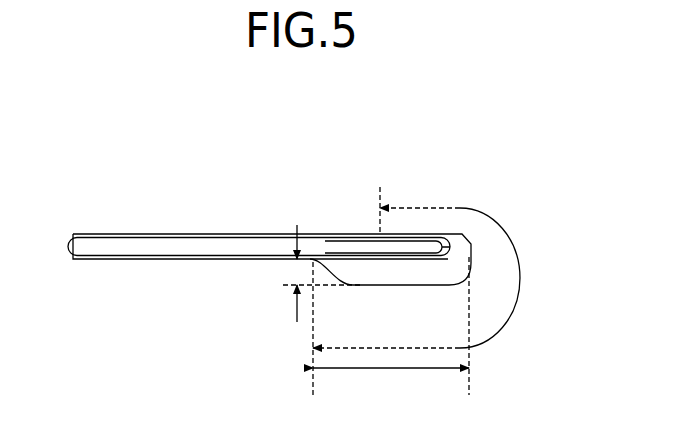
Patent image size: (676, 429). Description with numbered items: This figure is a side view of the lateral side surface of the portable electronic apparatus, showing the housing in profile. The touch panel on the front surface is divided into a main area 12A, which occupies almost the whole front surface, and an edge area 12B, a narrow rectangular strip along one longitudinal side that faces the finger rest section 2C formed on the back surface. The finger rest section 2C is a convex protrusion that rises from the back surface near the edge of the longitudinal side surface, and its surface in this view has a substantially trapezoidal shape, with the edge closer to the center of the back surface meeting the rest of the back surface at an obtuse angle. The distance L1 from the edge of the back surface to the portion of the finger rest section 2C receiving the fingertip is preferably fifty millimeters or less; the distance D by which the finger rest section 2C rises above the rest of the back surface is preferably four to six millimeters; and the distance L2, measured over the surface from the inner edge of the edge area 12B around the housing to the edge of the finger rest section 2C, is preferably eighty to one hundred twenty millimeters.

The main area 12A is at (249, 233).
The edge area 12B is at (403, 233).
The finger rest section 2C is at (405, 286).
The distance D is at (316, 273).
The distance L1 is at (391, 327).
The distance L2 is at (485, 215).